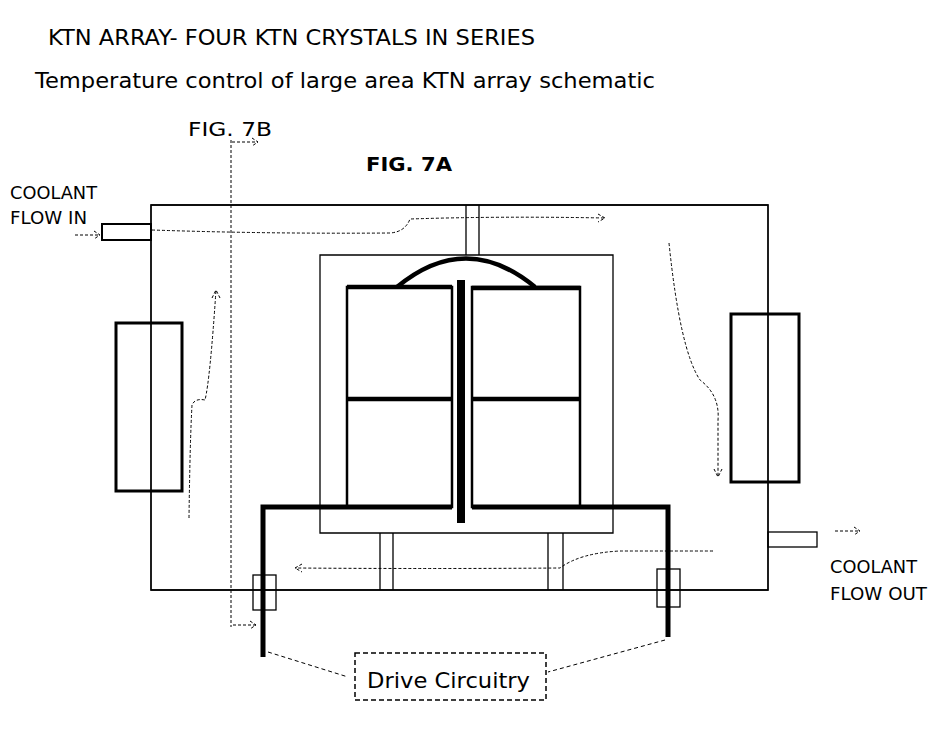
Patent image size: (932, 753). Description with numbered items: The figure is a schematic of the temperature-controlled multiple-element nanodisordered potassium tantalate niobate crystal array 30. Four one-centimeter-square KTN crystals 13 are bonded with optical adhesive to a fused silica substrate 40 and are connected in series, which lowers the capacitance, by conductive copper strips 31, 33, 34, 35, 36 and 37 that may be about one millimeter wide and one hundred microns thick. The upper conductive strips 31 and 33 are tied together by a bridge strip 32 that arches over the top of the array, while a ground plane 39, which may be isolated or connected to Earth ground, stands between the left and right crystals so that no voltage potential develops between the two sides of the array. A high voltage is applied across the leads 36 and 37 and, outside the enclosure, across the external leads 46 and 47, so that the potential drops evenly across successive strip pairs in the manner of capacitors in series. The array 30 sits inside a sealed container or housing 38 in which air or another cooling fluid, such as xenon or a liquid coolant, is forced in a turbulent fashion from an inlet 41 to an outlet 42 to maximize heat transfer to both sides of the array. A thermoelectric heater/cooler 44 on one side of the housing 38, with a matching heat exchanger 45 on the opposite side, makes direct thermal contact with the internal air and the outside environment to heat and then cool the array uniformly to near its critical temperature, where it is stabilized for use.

The KTN crystal 13 is at (463, 397).
The KTN array 30 is at (654, 148).
The conductive strip 31 is at (377, 286).
The bridge strip 32 is at (481, 257).
The conductive strip 33 is at (568, 286).
The conductive strip 34 is at (347, 399).
The conductive strip 35 is at (580, 399).
The lead 36 is at (278, 504).
The lead 37 is at (598, 511).
The housing 38 is at (151, 591).
The ground plane 39 is at (458, 524).
The fused silica substrate 40 is at (613, 478).
The inlet 41 is at (120, 241).
The outlet 42 is at (805, 533).
The thermoelectric heater/cooler 44 is at (128, 323).
The right thermal element 45 is at (781, 314).
The lead 46 is at (261, 657).
The lead 47 is at (672, 627).